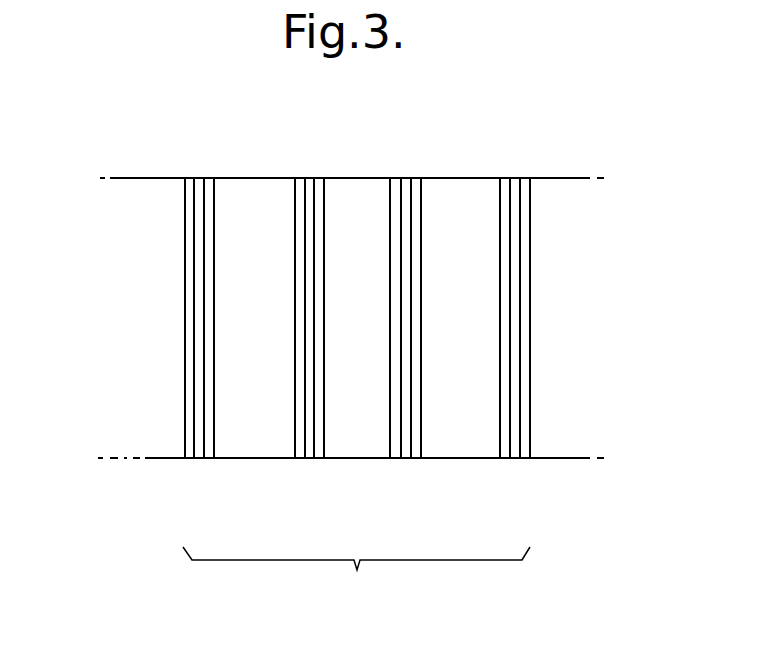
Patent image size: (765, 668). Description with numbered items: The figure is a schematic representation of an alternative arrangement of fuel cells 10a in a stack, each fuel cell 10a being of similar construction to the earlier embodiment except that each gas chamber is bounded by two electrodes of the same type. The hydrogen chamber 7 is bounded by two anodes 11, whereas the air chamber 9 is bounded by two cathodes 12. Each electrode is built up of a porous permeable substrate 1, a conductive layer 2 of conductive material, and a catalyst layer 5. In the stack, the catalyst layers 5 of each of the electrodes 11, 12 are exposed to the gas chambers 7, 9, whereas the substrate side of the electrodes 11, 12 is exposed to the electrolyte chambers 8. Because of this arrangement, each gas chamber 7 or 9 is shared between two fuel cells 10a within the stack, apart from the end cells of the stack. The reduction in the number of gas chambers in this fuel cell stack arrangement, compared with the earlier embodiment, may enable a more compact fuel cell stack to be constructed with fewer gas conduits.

The porous permeable substrate 1 is at (190, 443).
The conductive layer 2 is at (203, 448).
The catalyst layer 5 is at (208, 442).
The hydrogen chamber 7 is at (253, 193).
The electrolyte chamber 8 is at (147, 193).
The air chamber 9 is at (453, 193).
The fuel cell 10a is at (610, 500).
The anode 11 is at (201, 178).
The cathode 12 is at (407, 178).